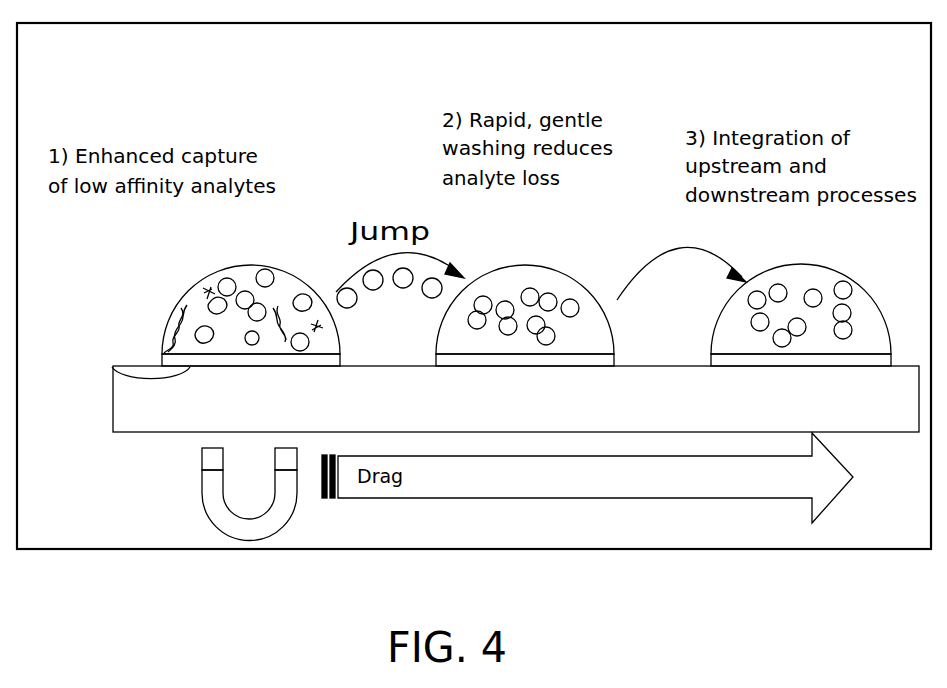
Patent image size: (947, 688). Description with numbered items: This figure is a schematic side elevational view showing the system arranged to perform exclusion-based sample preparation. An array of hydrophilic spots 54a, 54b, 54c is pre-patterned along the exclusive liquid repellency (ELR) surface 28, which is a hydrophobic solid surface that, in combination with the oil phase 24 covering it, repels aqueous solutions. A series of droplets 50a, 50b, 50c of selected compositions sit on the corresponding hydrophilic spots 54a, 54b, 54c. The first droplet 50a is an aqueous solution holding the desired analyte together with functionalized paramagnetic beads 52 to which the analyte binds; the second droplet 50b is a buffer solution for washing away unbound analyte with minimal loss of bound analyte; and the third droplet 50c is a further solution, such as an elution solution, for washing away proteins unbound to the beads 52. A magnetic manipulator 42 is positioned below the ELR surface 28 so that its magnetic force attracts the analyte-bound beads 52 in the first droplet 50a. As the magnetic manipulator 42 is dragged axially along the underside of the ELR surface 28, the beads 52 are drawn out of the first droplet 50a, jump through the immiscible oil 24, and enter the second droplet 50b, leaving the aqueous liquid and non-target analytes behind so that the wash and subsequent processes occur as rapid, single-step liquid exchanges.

The oil phase 24 is at (491, 243).
The exclusive liquid repellency surface 28 is at (137, 365).
The magnetic manipulator 42 is at (285, 520).
The droplet 50a is at (190, 292).
The droplet 50b is at (525, 268).
The droplet 50c is at (862, 290).
The functionalized paramagnetic beads 52 is at (272, 272).
The hydrophilic spot 54a is at (113, 380).
The hydrophilic spot 54b is at (462, 370).
The hydrophilic spot 54c is at (709, 360).